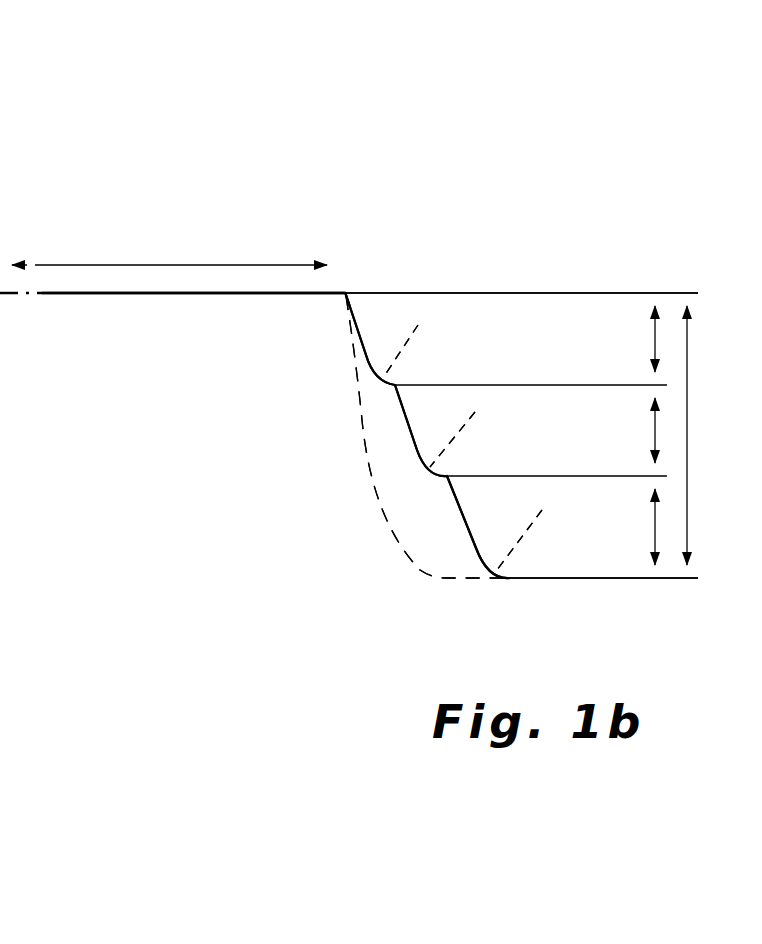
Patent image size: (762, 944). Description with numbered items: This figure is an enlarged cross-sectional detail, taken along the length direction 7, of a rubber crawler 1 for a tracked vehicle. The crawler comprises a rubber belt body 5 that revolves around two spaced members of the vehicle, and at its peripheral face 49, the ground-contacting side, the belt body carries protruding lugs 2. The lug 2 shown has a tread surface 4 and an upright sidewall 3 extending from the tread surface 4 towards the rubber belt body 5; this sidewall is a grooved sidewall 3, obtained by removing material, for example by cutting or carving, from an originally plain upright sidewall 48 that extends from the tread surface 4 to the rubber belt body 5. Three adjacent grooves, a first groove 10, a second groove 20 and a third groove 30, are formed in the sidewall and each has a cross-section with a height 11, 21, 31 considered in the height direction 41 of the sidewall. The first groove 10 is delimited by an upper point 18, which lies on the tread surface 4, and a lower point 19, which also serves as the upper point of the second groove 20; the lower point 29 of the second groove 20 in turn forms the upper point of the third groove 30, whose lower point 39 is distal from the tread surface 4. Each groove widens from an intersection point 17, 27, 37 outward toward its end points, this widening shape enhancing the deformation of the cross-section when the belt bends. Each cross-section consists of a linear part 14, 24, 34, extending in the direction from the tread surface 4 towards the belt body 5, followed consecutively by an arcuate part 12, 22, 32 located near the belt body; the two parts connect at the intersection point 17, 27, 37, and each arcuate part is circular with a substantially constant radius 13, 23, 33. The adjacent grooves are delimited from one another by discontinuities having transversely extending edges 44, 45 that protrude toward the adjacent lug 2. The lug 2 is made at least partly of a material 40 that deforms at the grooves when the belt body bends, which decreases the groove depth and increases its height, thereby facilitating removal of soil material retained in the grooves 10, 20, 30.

The rubber crawler 1 is at (193, 204).
The peripheral face 49 is at (313, 215).
The length direction 7 is at (106, 264).
The tread surface 4 is at (203, 292).
The lug 2 is at (178, 359).
The upright sidewall 3 is at (498, 333).
The upper point 18 is at (346, 292).
The linear part 14 is at (352, 318).
The radius 13 is at (418, 325).
The arcuate part 12 is at (383, 377).
The lower point 19 is at (396, 384).
The intersection point 17 is at (370, 366).
The first groove 10 is at (322, 390).
The transversely extending edge 44 is at (394, 387).
The intersection point 27 is at (416, 451).
The second groove 20 is at (389, 467).
The material 40 is at (403, 483).
The transversely extending edge 45 is at (449, 478).
The intersection point 37 is at (476, 548).
The third groove 30 is at (427, 569).
The upright sidewall 48 is at (432, 578).
The rubber belt body 5 is at (451, 611).
The linear part 24 is at (408, 420).
The radius 23 is at (453, 440).
The arcuate part 22 is at (437, 467).
The lower point 29 is at (455, 475).
The linear part 34 is at (467, 508).
The radius 33 is at (527, 530).
The arcuate part 32 is at (503, 572).
The lower point 39 is at (522, 578).
The height 11 is at (655, 342).
The height 21 is at (655, 427).
The height 31 is at (653, 552).
The height direction 41 is at (687, 422).